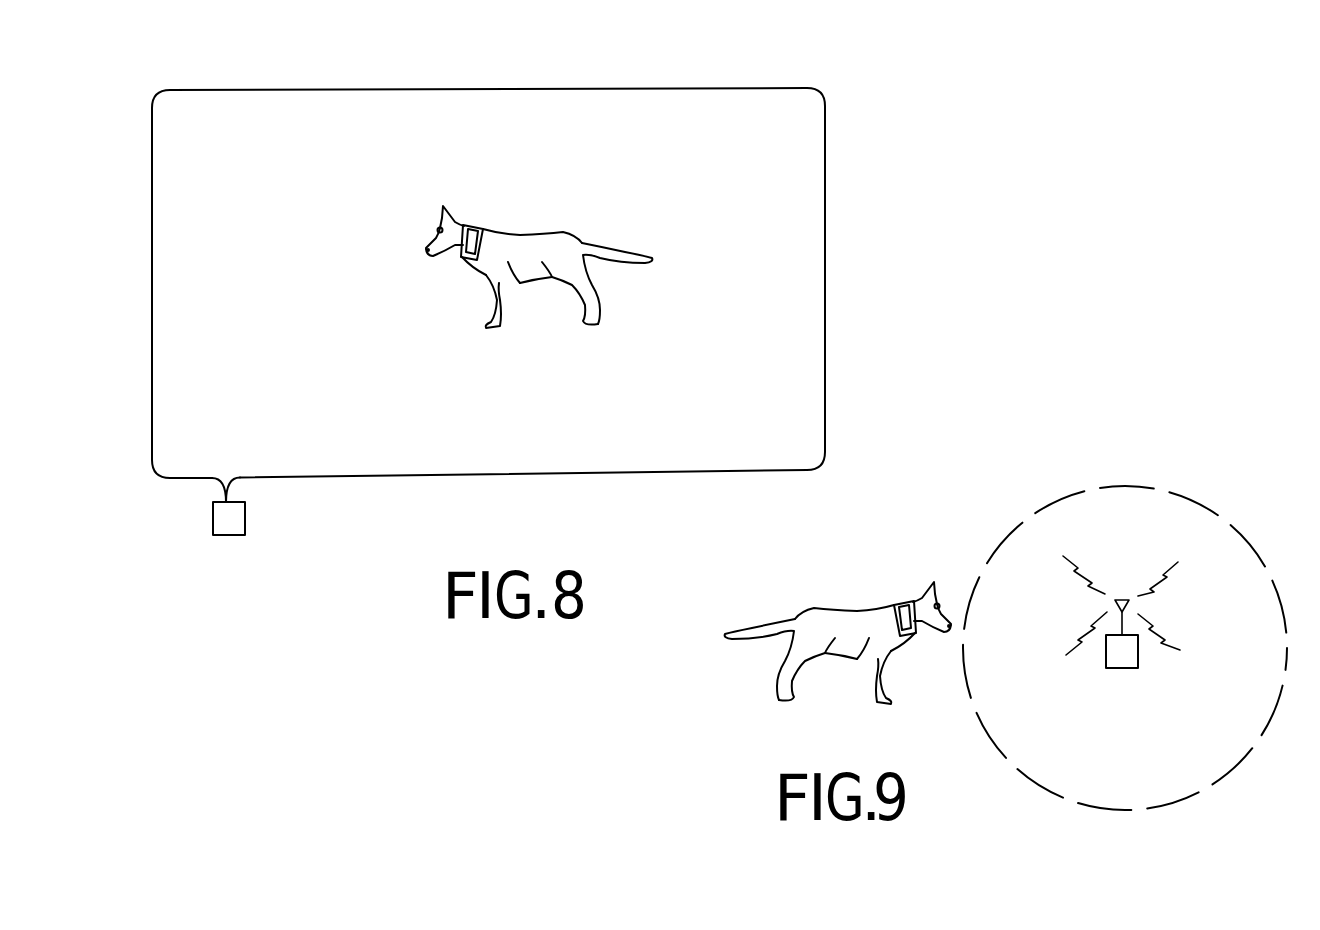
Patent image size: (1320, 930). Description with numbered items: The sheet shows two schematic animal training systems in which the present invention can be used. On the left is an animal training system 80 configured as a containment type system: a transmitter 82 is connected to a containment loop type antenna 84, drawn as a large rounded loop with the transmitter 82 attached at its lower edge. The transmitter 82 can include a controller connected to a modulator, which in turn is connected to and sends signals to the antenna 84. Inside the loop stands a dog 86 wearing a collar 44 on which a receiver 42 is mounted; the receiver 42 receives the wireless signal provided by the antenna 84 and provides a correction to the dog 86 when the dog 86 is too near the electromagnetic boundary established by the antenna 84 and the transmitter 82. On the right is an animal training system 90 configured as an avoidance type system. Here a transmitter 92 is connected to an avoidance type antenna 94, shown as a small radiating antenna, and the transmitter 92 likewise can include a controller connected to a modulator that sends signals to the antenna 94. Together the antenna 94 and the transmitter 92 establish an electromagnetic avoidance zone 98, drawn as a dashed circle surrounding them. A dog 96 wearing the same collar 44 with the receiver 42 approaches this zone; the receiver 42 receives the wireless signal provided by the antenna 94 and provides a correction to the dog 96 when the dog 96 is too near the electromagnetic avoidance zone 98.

In FIG. 8, the animal training system 80 is at (676, 69).
In FIG. 8, the transmitter 82 is at (227, 525).
In FIG. 8, the containment loop type antenna 84 is at (210, 89).
In FIG. 8, the dog 86 is at (565, 231).
In FIG. 8, the receiver 42 is at (470, 224).
In FIG. 9, the receiver 42 is at (896, 634).
In FIG. 8, the collar 44 is at (482, 230).
In FIG. 9, the collar 44 is at (898, 600).
In FIG. 9, the animal training system 90 is at (1122, 428).
In FIG. 9, the transmitter 92 is at (1125, 658).
In FIG. 9, the avoidance type antenna 94 is at (1122, 600).
In FIG. 9, the dog 96 is at (843, 610).
In FIG. 9, the electromagnetic avoidance zone 98 is at (1163, 490).